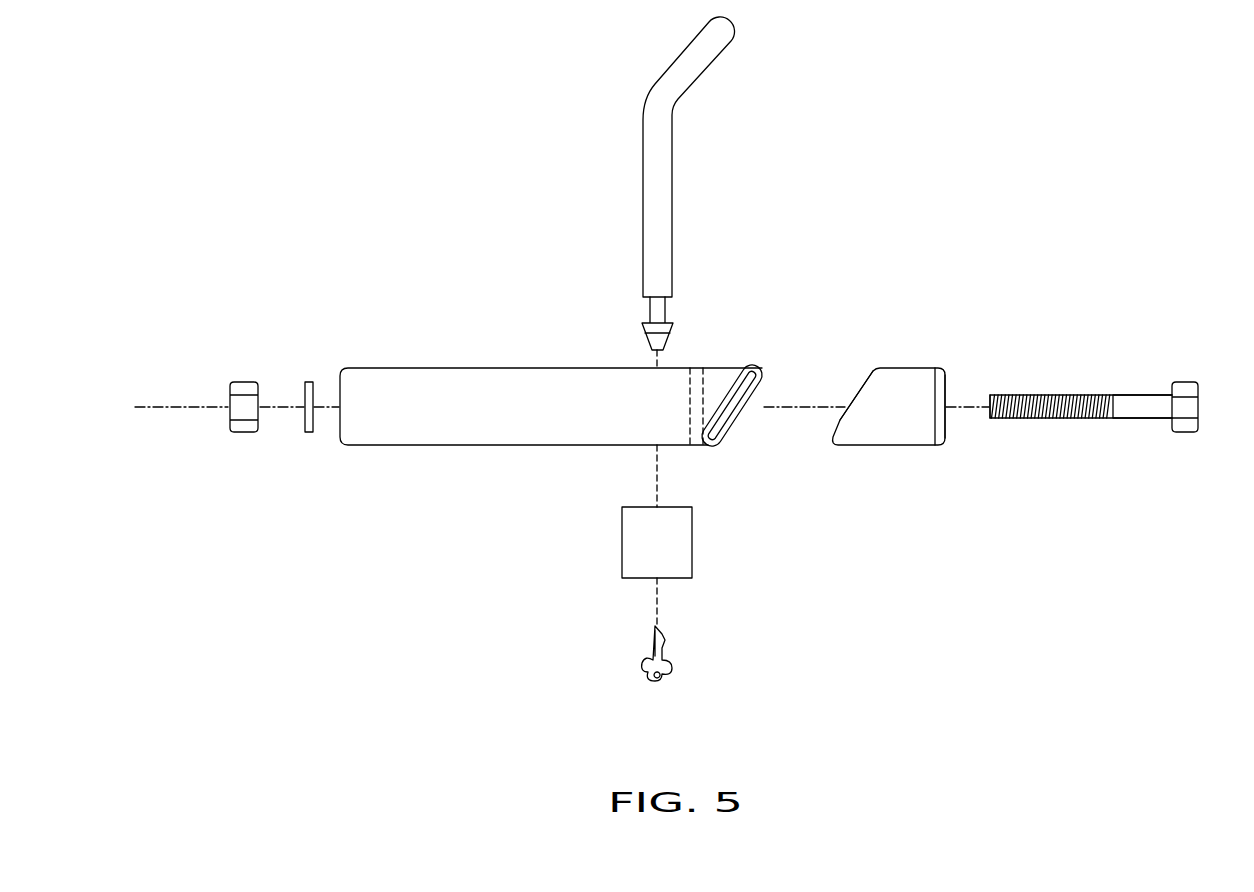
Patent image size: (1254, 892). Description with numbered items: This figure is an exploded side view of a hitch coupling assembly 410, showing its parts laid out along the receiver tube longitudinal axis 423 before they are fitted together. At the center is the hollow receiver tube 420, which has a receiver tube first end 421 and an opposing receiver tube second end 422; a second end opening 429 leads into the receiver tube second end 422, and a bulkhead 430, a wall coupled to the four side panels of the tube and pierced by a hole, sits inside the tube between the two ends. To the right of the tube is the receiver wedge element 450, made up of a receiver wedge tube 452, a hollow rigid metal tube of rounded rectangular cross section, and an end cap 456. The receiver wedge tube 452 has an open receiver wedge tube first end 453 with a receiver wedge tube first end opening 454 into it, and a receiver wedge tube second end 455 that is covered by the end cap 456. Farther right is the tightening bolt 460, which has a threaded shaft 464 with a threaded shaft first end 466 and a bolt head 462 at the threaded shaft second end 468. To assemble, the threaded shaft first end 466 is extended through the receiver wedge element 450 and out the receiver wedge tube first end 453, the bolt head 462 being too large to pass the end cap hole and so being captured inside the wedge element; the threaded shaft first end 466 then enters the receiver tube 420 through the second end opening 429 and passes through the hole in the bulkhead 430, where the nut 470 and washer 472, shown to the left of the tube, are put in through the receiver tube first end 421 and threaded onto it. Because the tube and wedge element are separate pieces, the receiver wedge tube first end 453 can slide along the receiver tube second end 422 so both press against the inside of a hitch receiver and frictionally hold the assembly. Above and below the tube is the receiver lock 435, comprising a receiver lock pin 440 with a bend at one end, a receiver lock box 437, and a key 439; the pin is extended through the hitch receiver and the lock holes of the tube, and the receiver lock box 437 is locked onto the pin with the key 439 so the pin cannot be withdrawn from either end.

The hitch coupling assembly 410 is at (860, 106).
The receiver tube 420 is at (509, 375).
The receiver tube first end 421 is at (333, 481).
The receiver tube second end 422 is at (760, 350).
The receiver tube longitudinal axis 423 is at (157, 406).
The second end opening 429 is at (768, 380).
The bulkhead 430 is at (702, 398).
The receiver lock 435 is at (591, 608).
The receiver lock box 437 is at (684, 542).
The key 439 is at (672, 668).
The receiver lock pin 440 is at (672, 92).
The receiver wedge element 450 is at (912, 340).
The receiver wedge tube 452 is at (892, 440).
The receiver wedge tube first end 453 is at (833, 448).
The receiver wedge tube first end opening 454 is at (858, 368).
The receiver wedge tube second end 455 is at (946, 464).
The end cap 456 is at (945, 376).
The tightening bolt 460 is at (1118, 370).
The bolt head 462 is at (1183, 388).
The threaded shaft 464 is at (1078, 420).
The threaded shaft first end 466 is at (987, 404).
The threaded shaft second end 468 is at (1165, 413).
The nut 470 is at (244, 381).
The washer 472 is at (309, 381).